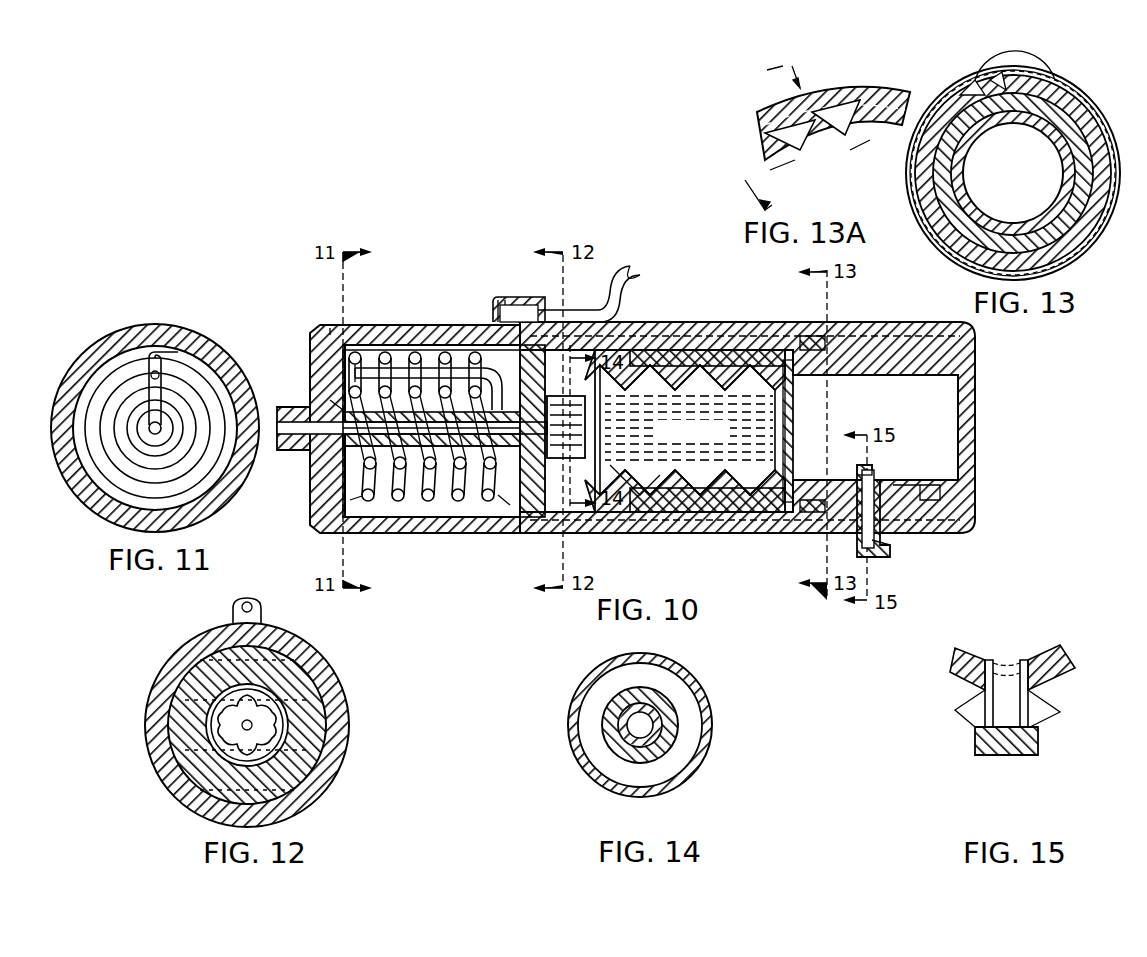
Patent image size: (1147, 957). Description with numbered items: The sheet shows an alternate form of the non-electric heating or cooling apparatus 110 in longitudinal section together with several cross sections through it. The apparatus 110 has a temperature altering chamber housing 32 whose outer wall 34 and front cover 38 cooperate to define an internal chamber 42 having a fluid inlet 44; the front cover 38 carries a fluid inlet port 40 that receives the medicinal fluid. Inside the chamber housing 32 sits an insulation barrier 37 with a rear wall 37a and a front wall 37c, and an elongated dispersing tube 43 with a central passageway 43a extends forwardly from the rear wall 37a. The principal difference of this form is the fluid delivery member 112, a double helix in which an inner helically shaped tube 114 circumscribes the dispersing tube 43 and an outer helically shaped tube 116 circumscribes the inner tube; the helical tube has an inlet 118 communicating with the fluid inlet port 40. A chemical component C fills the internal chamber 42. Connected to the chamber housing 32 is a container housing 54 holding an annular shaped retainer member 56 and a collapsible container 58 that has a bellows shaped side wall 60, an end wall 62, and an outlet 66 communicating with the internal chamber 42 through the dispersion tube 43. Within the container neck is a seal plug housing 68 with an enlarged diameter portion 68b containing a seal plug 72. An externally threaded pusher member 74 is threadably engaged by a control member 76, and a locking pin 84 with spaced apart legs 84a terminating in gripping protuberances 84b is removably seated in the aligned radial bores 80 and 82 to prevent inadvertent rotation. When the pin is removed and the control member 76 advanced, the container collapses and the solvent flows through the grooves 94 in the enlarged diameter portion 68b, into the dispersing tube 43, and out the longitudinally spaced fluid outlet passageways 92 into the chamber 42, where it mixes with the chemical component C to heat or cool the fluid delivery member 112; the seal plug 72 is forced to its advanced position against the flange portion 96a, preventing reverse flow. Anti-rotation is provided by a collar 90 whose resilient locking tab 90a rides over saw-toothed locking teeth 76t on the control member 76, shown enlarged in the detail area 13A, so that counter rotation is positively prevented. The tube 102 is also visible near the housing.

In FIG. 10, the non-electric heating or cooling apparatus 110 is at (620, 238).
In FIG. 10, the front cover 38 is at (318, 335).
In FIG. 11, the front cover 38 is at (155, 428).
In FIG. 10, the front wall 37c is at (330, 330).
In FIG. 10, the fluid inlet port 40 is at (312, 408).
In FIG. 10, the fluid inlet 44 is at (330, 408).
In FIG. 10, the temperature altering chamber housing 32 is at (385, 325).
In FIG. 10, the internal chamber 42 is at (428, 348).
In FIG. 10, the fluid delivery member 112 is at (395, 350).
In FIG. 10, the outer helically shaped tube 116 is at (490, 370).
In FIG. 10, the central passageway 43a is at (450, 405).
In FIG. 10, the dispersing tube 43 is at (430, 470).
In FIG. 10, the outer wall 34 is at (447, 518).
In FIG. 10, the insulation barrier 37 is at (380, 518).
In FIG. 10, the rear wall 37a is at (500, 505).
In FIG. 10, the inner helically shaped tube 114 is at (355, 378).
In FIG. 11, the inner helically shaped tube 114 is at (188, 458).
In FIG. 10, the inlet 118 is at (380, 428).
In FIG. 10, the fluid outlet passageways 92 is at (410, 440).
In FIG. 10, the chemical component C is at (360, 497).
In FIG. 10, the container housing 54 is at (740, 325).
In FIG. 12, the container housing 54 is at (349, 723).
In FIG. 10, the bellows shaped side wall 60 is at (705, 360).
In FIG. 10, the control member 76 is at (925, 322).
In FIG. 13, the control member 76 is at (1072, 228).
In FIG. 10, the end wall 62 is at (789, 431).
In FIG. 10, the tube 102 is at (630, 305).
In FIG. 10, the fluid passageways 94 is at (540, 340).
In FIG. 12, the fluid passageways 94 is at (280, 688).
In FIG. 10, the annular shaped retainer member 56 is at (570, 510).
In FIG. 12, the annular shaped retainer member 56 is at (315, 737).
In FIG. 10, the outlet 66 is at (540, 515).
In FIG. 10, the flange portion 96a is at (530, 520).
In FIG. 10, the seal plug housing 68 is at (615, 500).
In FIG. 14, the seal plug housing 68 is at (648, 700).
In FIG. 10, the enlarged diameter portion 68b is at (622, 512).
In FIG. 10, the collapsible container 58 is at (735, 512).
In FIG. 14, the collapsible container 58 is at (590, 678).
In FIG. 10, the seal plug 72 is at (620, 431).
In FIG. 14, the seal plug 72 is at (650, 722).
In FIG. 10, the locking pin 84 is at (868, 490).
In FIG. 15, the locking pin 84 is at (975, 745).
In FIG. 10, the radial bore 80 is at (865, 470).
In FIG. 10, the radial bore 82 is at (876, 535).
In FIG. 10, the pusher member 74 is at (932, 510).
In FIG. 13, the locking teeth 76t is at (982, 80).
In FIG. 13A, the locking teeth 76t is at (790, 132).
In FIG. 13, the collar 90 is at (1050, 82).
In FIG. 13A, the collar 90 is at (870, 92).
In FIG. 13A, the locking tab 90a is at (845, 162).
In FIG. 13, the detail circle 13A is at (1036, 60).
In FIG. 15, the gripping protuberances 84b is at (1030, 663).
In FIG. 15, the legs 84a is at (1045, 703).